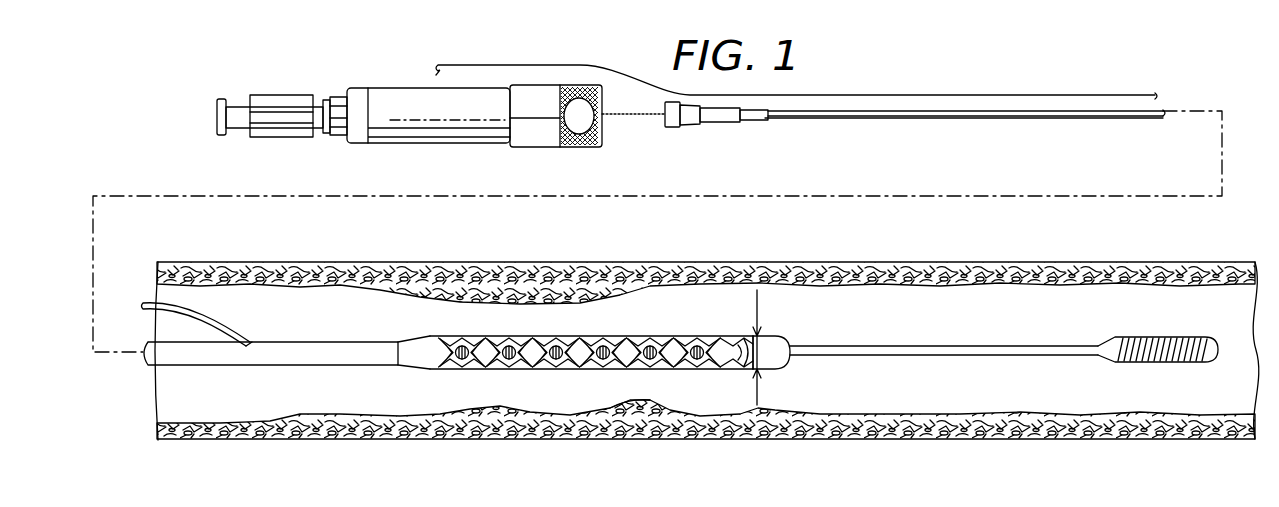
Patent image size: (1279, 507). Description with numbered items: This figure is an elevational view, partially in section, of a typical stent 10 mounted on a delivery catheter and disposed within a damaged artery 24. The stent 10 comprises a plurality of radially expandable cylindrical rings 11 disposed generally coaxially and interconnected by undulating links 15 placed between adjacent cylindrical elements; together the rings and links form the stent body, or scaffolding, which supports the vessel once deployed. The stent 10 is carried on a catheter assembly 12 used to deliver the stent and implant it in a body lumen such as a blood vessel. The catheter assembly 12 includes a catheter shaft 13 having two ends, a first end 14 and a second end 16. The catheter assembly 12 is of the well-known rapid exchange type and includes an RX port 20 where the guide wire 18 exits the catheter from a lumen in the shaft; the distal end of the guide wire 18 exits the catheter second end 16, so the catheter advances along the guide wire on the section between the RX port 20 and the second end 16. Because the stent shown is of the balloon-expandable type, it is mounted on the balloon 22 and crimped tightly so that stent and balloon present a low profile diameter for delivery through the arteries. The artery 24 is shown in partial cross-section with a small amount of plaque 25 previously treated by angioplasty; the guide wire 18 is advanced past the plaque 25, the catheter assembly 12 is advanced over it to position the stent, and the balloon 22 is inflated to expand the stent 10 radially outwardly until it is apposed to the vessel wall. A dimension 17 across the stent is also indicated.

The stent 10 is at (460, 322).
The cylindrical rings 11 is at (428, 338).
The catheter assembly 12 is at (888, 120).
The catheter shaft 13 is at (830, 118).
The first end 14 is at (268, 93).
The undulating links 15 is at (460, 370).
The second end 16 is at (786, 338).
The stent diameter 17 is at (750, 304).
The guide wire 18 is at (160, 302).
The RX port 20 is at (252, 341).
The balloon 22 is at (770, 368).
The artery 24 is at (645, 262).
The plaque 25 is at (645, 412).